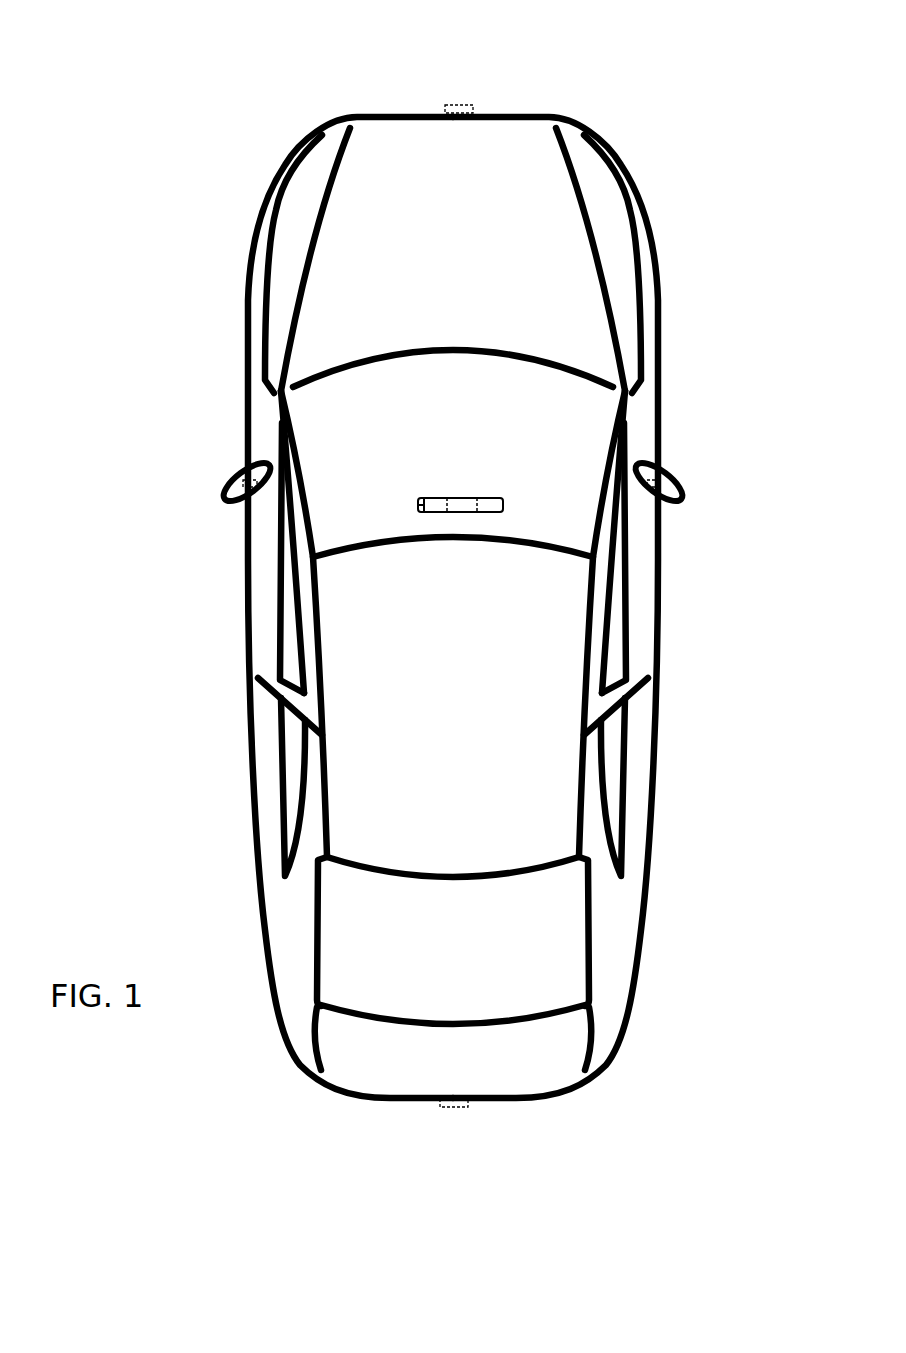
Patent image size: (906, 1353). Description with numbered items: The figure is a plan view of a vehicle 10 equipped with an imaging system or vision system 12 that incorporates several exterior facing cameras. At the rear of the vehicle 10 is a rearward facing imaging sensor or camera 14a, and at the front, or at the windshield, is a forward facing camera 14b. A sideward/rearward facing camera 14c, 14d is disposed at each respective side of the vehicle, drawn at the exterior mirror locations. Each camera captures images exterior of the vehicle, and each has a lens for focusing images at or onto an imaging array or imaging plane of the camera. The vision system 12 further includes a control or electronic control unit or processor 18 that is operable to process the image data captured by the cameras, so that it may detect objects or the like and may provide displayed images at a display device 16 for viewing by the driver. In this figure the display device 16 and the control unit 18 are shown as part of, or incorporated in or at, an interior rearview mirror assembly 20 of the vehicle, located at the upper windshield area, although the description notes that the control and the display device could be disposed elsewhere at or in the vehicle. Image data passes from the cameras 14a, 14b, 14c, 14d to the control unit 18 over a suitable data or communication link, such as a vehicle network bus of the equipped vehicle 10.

The vehicle 10 is at (203, 208).
The vision system 12 is at (403, 1128).
The rearward facing camera 14a is at (457, 1107).
The forward facing camera 14b is at (462, 105).
The sideward/rearward facing camera 14c is at (240, 478).
The sideward/rearward facing camera 14d is at (667, 477).
The display device 16 is at (437, 497).
The electronic control unit 18 is at (460, 495).
The interior rearview mirror assembly 20 is at (507, 498).